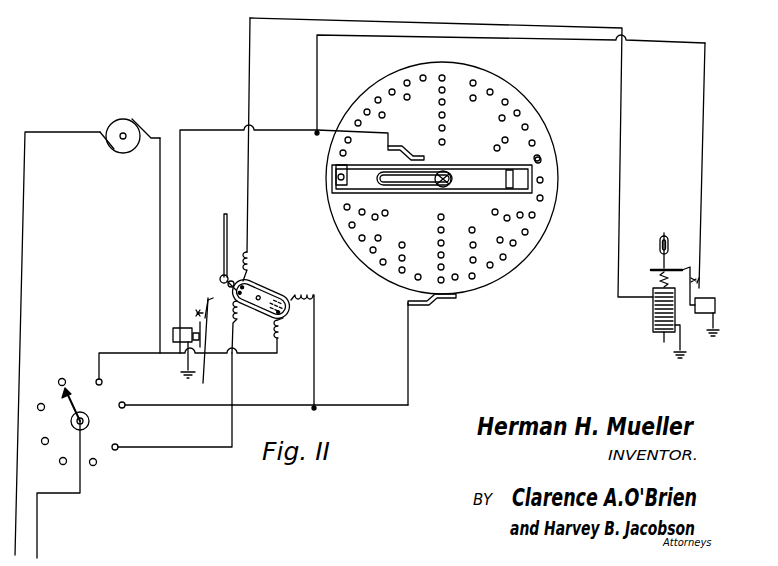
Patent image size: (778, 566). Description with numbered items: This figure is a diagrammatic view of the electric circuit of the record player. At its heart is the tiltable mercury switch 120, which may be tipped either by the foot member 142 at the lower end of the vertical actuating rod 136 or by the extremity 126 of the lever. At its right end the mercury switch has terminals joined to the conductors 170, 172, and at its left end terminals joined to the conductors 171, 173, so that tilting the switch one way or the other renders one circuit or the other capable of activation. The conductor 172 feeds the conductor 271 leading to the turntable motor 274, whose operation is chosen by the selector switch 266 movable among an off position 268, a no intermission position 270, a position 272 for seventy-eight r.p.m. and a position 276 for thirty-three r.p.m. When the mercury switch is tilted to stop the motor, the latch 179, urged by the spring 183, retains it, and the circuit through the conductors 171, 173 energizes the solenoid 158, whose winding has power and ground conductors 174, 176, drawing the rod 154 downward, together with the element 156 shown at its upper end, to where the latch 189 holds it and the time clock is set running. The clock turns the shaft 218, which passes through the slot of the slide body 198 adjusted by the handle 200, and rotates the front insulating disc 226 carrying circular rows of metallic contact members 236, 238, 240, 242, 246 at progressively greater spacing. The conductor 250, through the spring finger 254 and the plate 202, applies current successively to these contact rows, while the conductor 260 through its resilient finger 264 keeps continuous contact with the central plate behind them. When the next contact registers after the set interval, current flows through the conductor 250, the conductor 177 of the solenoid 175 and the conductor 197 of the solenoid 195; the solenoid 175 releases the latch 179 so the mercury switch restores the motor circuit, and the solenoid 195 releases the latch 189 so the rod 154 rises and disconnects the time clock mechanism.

The mercury switch element 120 is at (267, 292).
The extremity of the lever 126 is at (220, 276).
The vertical actuating rod 136 is at (222, 236).
The foot member 142 is at (221, 281).
The rod 154 is at (658, 268).
The plunger rod 156 is at (664, 233).
The solenoid 158 is at (668, 310).
The electric conductor 170 is at (281, 354).
The conductor 171 is at (249, 231).
The conductor 172 is at (315, 348).
The conductor 173 is at (233, 393).
The power conductor 174 is at (628, 298).
The solenoid 175 is at (175, 330).
The ground conductor 176 is at (678, 350).
The conductor 177 is at (182, 194).
The latch 179 is at (202, 350).
The spring 183 is at (196, 313).
The latch 189 is at (696, 282).
The solenoid 195 is at (704, 305).
The electric conductor 197 is at (702, 214).
The slide body 198 is at (532, 190).
The handle 200 is at (513, 180).
The plate 202 is at (333, 169).
The shaft 218 is at (452, 179).
The front insulating disc 226 is at (527, 112).
The metallic contact members 236 is at (360, 240).
The metallic contact members 238 is at (359, 212).
The metallic contact members 240 is at (445, 100).
The metallic contact members 242 is at (444, 241).
The metallic contact members 246 is at (446, 128).
The conductor 250 is at (316, 69).
The spring finger 254 is at (409, 152).
The electric conductor 260 is at (410, 375).
The resilient finger 264 is at (437, 302).
The selector switch 266 is at (72, 400).
The off position 268 is at (61, 379).
The no intermission position 270 is at (103, 383).
The conductor 271 is at (158, 204).
The position 272 is at (125, 408).
The turntable motor 274 is at (118, 132).
The position 276 is at (118, 450).